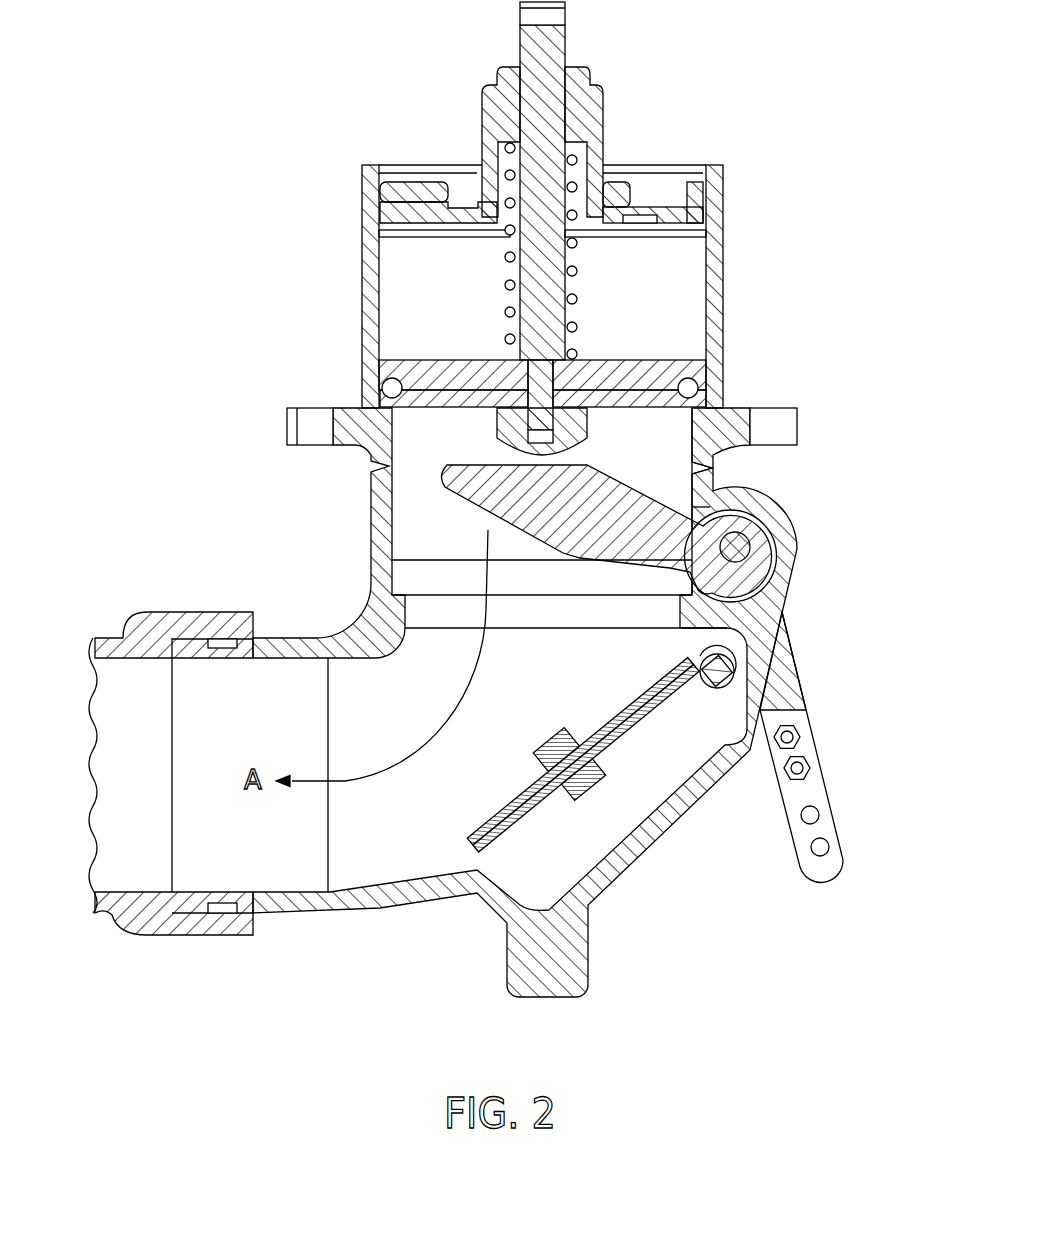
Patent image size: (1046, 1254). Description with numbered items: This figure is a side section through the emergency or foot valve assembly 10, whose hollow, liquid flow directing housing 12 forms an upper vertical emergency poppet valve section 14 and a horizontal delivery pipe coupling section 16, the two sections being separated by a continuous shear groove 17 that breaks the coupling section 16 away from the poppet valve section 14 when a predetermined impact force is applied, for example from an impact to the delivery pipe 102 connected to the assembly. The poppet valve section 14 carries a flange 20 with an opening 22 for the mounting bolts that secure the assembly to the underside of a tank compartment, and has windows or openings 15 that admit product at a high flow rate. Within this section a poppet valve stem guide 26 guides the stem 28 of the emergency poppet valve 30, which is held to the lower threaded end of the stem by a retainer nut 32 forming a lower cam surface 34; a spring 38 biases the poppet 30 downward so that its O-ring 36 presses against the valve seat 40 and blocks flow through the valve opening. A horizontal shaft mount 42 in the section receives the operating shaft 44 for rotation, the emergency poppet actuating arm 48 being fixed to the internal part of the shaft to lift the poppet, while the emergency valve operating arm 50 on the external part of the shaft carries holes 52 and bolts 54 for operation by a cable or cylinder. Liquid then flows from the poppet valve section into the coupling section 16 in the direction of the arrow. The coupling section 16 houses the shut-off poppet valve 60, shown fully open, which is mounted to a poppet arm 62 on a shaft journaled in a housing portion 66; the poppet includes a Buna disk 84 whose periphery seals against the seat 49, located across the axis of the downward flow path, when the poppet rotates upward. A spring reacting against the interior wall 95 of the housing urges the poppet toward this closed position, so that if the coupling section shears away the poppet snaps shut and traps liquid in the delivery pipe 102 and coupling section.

The emergency or foot valve assembly 10 is at (705, 957).
The housing 12 is at (343, 623).
The emergency poppet valve section 14 is at (726, 256).
The windows or openings 15 is at (678, 302).
The delivery pipe coupling section 16 is at (278, 918).
The shear groove 17 is at (740, 467).
The flange 20 is at (800, 424).
The opening 22 is at (762, 422).
The poppet valve stem guide 26 is at (605, 113).
The stem 28 is at (565, 45).
The poppet valve 30 is at (448, 367).
The retainer nut 32 is at (585, 445).
The lower cam surface 34 is at (500, 452).
The O-ring 36 is at (392, 387).
The spring 38 is at (507, 283).
The valve seat 40 is at (690, 387).
The horizontal shaft mount 42 is at (718, 490).
The operating shaft 44 is at (750, 547).
The emergency poppet actuating arm 48 is at (480, 525).
The seat 49 is at (362, 600).
The emergency valve operating arm 50 is at (780, 685).
The holes 52 is at (822, 845).
The bolts 54 is at (808, 766).
The poppet valve 60 is at (658, 711).
The poppet arm 62 is at (700, 708).
The housing portion 66 is at (703, 643).
The poppet Buna disk 84 is at (473, 845).
The interior wall 95 is at (720, 710).
The delivery pipe 102 is at (112, 910).